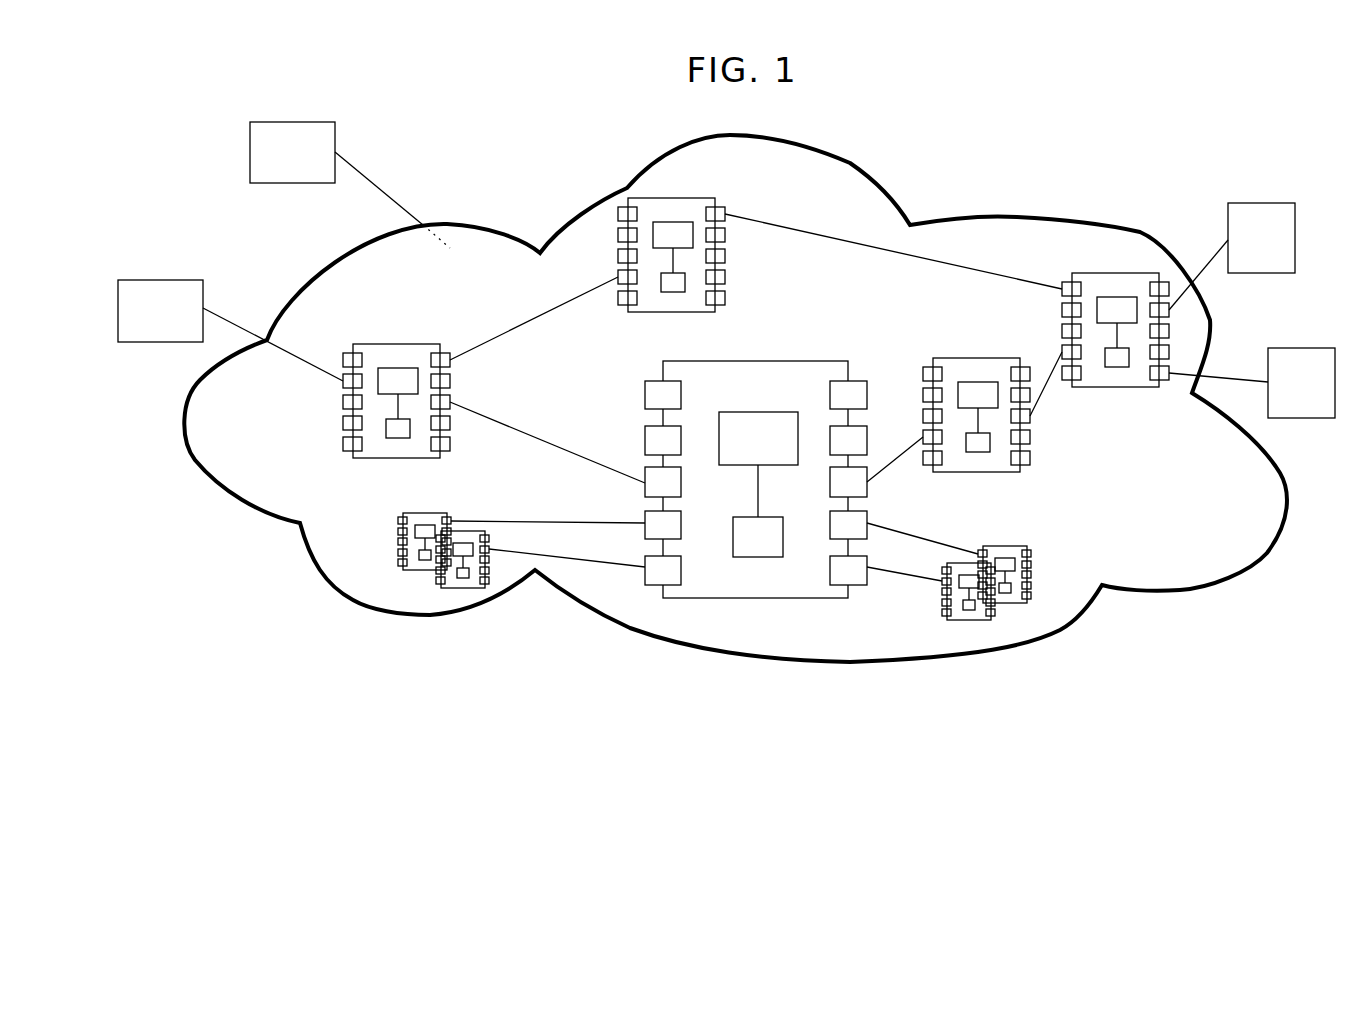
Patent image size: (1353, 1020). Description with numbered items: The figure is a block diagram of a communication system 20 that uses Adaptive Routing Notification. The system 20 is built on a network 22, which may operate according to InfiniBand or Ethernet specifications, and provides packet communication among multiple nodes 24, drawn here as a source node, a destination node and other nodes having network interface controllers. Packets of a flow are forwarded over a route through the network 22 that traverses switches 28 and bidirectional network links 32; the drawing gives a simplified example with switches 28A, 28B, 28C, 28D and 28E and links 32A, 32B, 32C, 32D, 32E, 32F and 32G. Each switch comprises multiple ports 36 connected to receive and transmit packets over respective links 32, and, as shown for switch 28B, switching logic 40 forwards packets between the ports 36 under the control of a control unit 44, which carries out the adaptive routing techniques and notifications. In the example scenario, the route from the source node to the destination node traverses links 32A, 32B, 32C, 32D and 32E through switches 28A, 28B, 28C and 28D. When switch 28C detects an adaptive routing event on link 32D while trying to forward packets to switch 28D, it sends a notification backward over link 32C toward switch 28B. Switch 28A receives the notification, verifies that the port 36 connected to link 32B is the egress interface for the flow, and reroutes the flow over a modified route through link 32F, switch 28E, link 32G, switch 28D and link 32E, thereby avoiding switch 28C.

The communication system 20 is at (1068, 98).
The network 22 is at (635, 168).
The nodes 24 is at (296, 183).
The switches 28 is at (424, 570).
The switch 28A is at (395, 458).
The switch 28B is at (756, 503).
The switch 28C is at (978, 473).
The switch 28D is at (1115, 387).
The switch 28E is at (691, 198).
The network links 32 is at (603, 523).
The link 32A is at (233, 318).
The link 32B is at (534, 425).
The link 32C is at (899, 454).
The link 32D is at (1050, 370).
The link 32E is at (1205, 262).
The link 32F is at (540, 313).
The link 32G is at (805, 230).
The ports 36 is at (756, 548).
The switching logic 40 is at (781, 465).
The control unit 44 is at (748, 517).